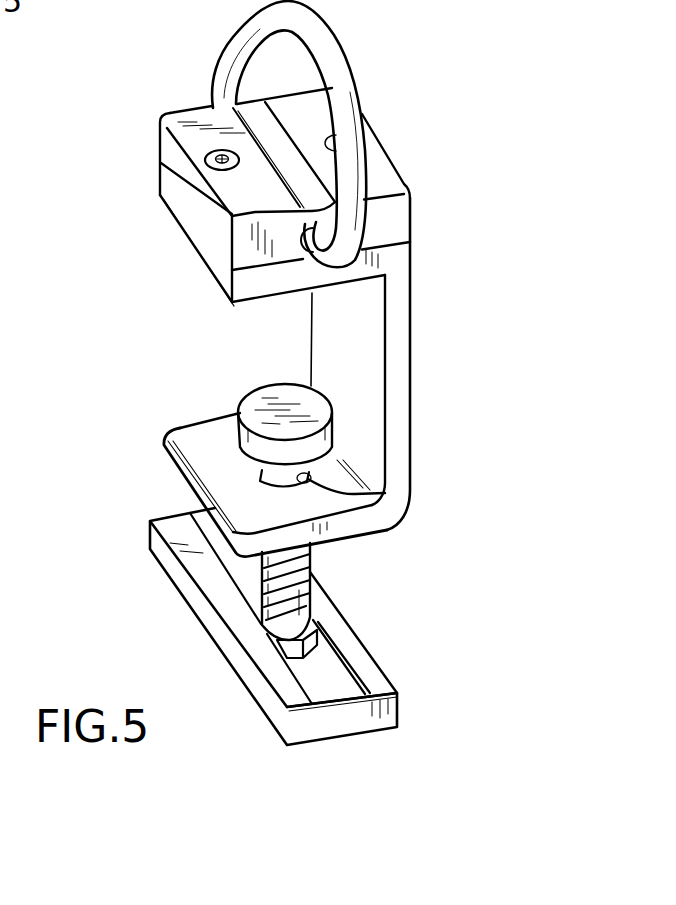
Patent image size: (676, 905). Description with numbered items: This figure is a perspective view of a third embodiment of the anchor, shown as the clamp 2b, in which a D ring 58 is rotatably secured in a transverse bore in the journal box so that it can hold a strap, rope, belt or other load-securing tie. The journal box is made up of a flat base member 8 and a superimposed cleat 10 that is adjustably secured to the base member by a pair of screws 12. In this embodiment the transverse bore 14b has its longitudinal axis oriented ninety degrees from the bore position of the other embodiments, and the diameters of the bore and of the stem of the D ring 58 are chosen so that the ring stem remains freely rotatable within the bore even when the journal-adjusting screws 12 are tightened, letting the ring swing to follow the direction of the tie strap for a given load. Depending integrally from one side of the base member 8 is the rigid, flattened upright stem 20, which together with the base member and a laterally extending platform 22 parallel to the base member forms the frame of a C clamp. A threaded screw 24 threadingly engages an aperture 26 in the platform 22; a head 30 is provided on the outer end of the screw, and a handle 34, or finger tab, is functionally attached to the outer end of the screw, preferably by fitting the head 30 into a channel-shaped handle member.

The clamp 2b is at (456, 307).
The base member 8 is at (193, 227).
The cleat 10 is at (380, 174).
The screws 12 is at (222, 160).
The transverse bore 14b is at (310, 249).
The upright stem 20 is at (398, 368).
The laterally extending platform 22 is at (193, 435).
The threaded screw 24 is at (297, 571).
The aperture 26 is at (385, 493).
The head 30 is at (308, 645).
The handle 34 is at (395, 723).
The D ring 58 is at (332, 68).